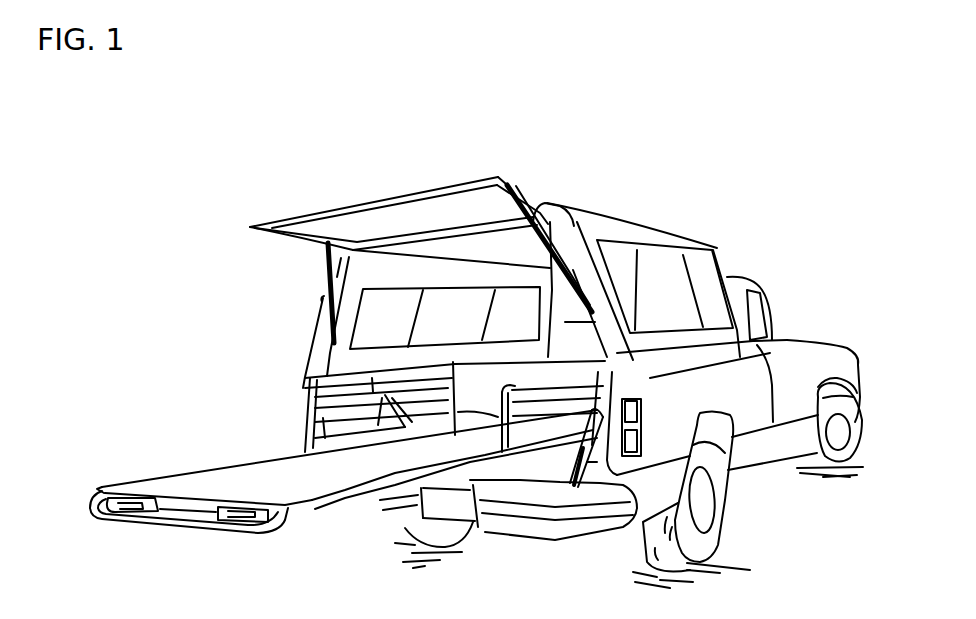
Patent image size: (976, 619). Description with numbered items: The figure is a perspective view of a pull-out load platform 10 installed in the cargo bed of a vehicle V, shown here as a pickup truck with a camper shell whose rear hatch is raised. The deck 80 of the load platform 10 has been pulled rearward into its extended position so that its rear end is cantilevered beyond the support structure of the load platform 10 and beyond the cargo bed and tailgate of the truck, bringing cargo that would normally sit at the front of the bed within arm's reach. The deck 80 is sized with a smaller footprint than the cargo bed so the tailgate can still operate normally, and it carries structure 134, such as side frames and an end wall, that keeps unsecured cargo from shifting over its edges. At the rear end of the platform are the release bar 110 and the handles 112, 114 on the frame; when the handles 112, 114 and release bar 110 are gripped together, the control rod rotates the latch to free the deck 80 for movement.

The pull-out load platform 10 is at (137, 418).
The deck 80 is at (235, 470).
The release bar 110 is at (156, 528).
The handle 112 is at (122, 515).
The handle 114 is at (248, 525).
The structure 134 is at (495, 432).
The vehicle V is at (489, 145).